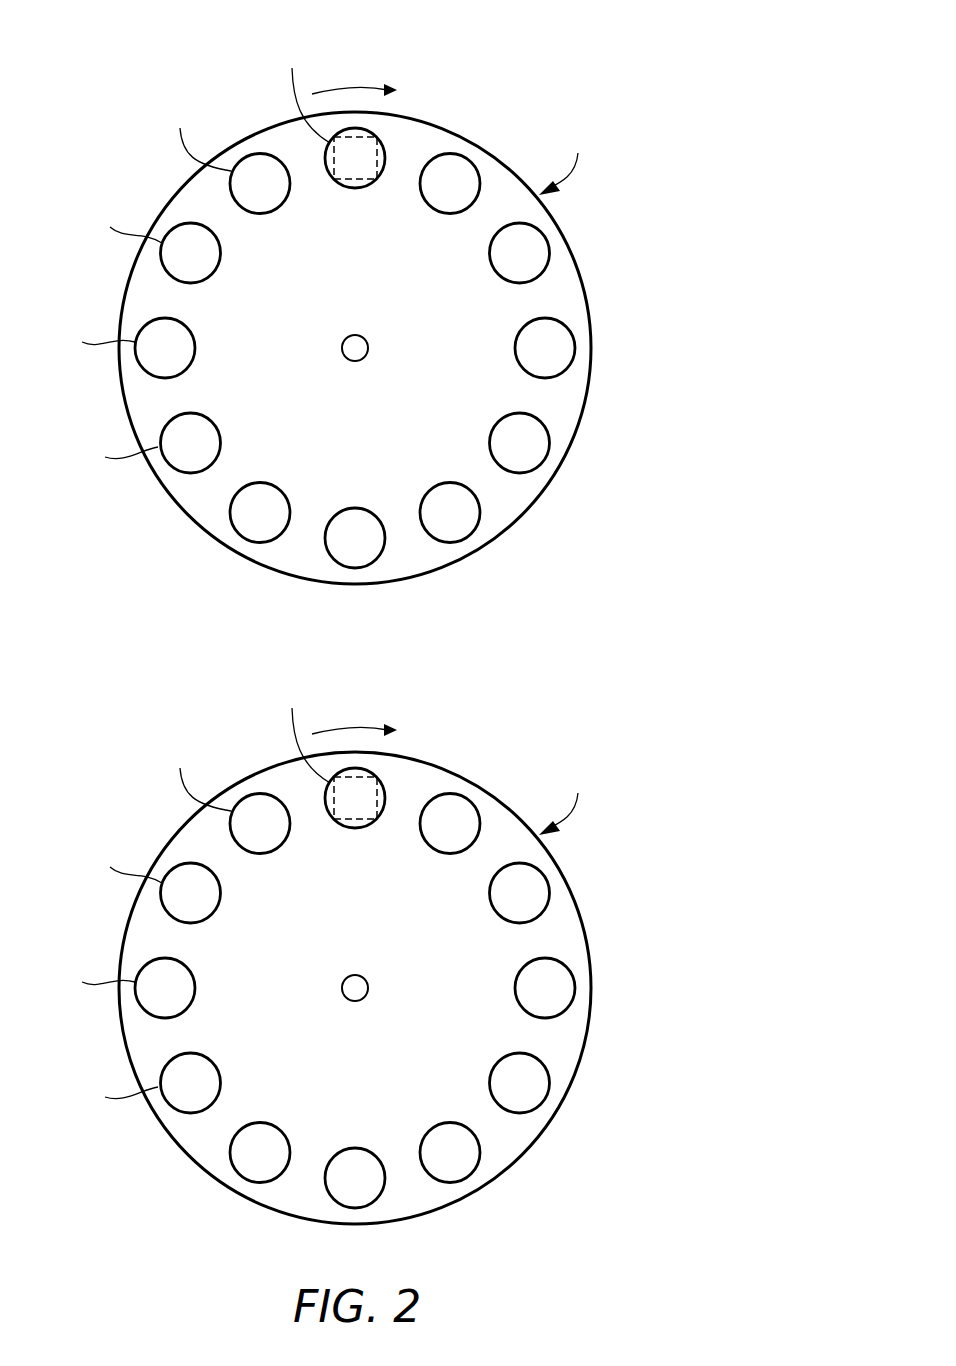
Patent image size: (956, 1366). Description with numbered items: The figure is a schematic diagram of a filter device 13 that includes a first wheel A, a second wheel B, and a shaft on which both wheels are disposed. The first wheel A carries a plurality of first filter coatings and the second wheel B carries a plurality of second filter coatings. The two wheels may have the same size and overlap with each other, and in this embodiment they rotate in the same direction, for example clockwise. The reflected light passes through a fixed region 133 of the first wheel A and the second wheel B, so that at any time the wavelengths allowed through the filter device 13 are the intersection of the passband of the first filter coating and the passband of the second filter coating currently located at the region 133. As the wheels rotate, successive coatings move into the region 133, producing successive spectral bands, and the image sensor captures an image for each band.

The filter device 13 is at (705, 34).
The fixed region 133 is at (378, 146).